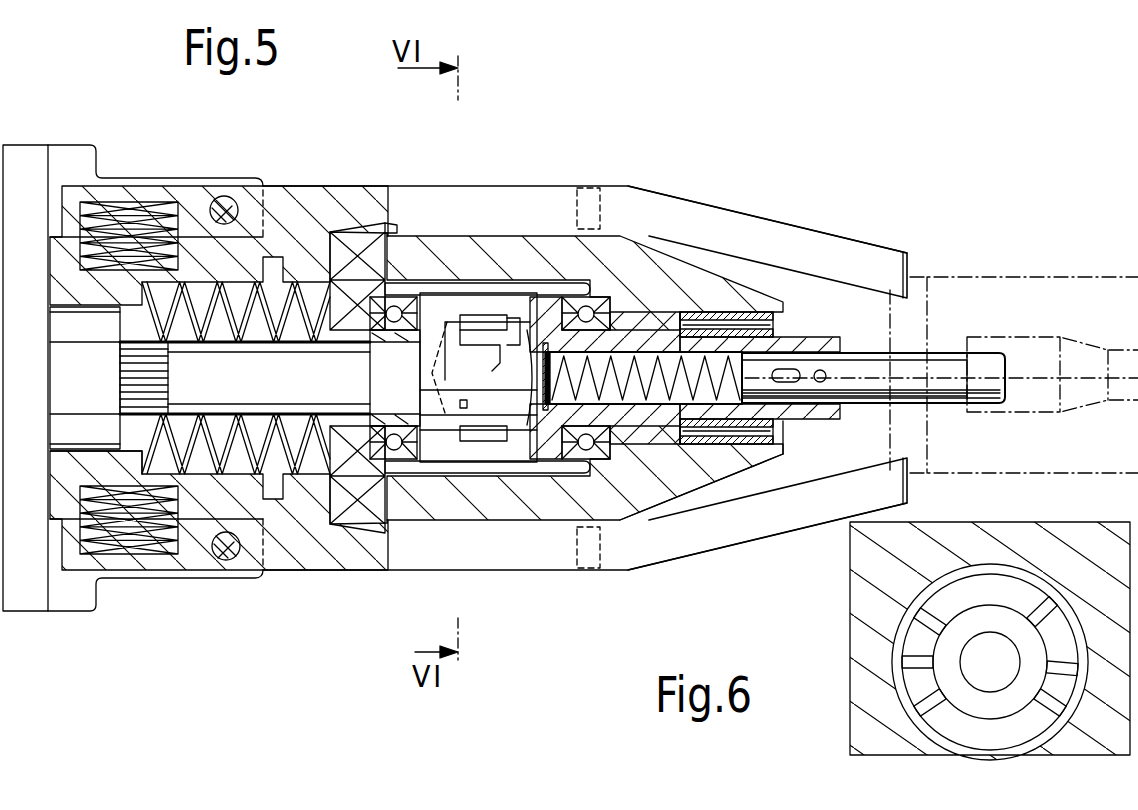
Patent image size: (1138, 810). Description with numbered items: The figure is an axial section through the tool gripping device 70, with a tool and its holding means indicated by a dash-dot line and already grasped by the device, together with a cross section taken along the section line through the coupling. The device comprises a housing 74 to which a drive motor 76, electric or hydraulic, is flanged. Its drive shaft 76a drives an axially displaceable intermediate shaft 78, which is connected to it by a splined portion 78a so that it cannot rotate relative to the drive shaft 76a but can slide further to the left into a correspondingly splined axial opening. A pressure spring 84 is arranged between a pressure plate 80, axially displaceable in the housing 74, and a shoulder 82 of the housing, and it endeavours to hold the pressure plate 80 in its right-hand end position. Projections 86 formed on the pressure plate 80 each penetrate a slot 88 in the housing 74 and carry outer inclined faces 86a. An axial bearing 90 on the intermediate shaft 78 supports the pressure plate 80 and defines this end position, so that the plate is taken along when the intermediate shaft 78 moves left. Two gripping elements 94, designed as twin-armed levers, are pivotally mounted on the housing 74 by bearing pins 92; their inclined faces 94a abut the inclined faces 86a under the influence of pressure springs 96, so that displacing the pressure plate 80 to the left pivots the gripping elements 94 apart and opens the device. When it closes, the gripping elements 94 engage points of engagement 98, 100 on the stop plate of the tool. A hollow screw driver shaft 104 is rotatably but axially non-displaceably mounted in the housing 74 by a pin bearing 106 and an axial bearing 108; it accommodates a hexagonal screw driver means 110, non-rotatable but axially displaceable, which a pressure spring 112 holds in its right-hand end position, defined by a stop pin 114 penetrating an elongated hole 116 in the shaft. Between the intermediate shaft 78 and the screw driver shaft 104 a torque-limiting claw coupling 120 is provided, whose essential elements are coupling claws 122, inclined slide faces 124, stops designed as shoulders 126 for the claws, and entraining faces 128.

In FIG. 5, the tool gripping device 70 is at (698, 194).
In FIG. 5, the housing 74 is at (176, 178).
In FIG. 5, the drive motor 76 is at (28, 162).
In FIG. 5, the drive shaft 76a is at (100, 376).
In FIG. 5, the intermediate shaft 78 is at (322, 376).
In FIG. 5, the splined portion 78a is at (170, 374).
In FIG. 5, the pressure plate 80 is at (428, 334).
In FIG. 5, the shoulder 82 is at (147, 460).
In FIG. 5, the pressure spring 84 is at (314, 462).
In FIG. 5, the projections 86 is at (345, 238).
In FIG. 5, the inclined faces 86a is at (390, 226).
In FIG. 5, the slot 88 is at (300, 260).
In FIG. 5, the axial bearing 90 is at (412, 440).
In FIG. 5, the bearing pins 92 is at (228, 208).
In FIG. 5, the gripping elements 94 is at (604, 196).
In FIG. 5, the inclined faces 94a is at (364, 522).
In FIG. 5, the pressure springs 96 is at (125, 215).
In FIG. 5, the point of engagement 98 is at (893, 292).
In FIG. 5, the point of engagement 100 is at (884, 472).
In FIG. 5, the screw driver shaft 104 is at (800, 338).
In FIG. 5, the pin bearing 106 is at (727, 432).
In FIG. 5, the axial bearing 108 is at (602, 470).
In FIG. 5, the screw driver means 110 is at (940, 370).
In FIG. 5, the pressure spring 112 is at (615, 370).
In FIG. 5, the stop pin 114 is at (824, 368).
In FIG. 5, the elongated hole 116 is at (807, 418).
In FIG. 5, the torque-limiting claw coupling 120 is at (478, 340).
In FIG. 5, the coupling claws 122 is at (483, 302).
In FIG. 6, the coupling claws 122 is at (918, 665).
In FIG. 5, the inclined slide faces 124 is at (458, 440).
In FIG. 5, the shoulders 126 is at (468, 403).
In FIG. 5, the entraining faces 128 is at (518, 330).
In FIG. 6, the entraining faces 128 is at (1040, 612).